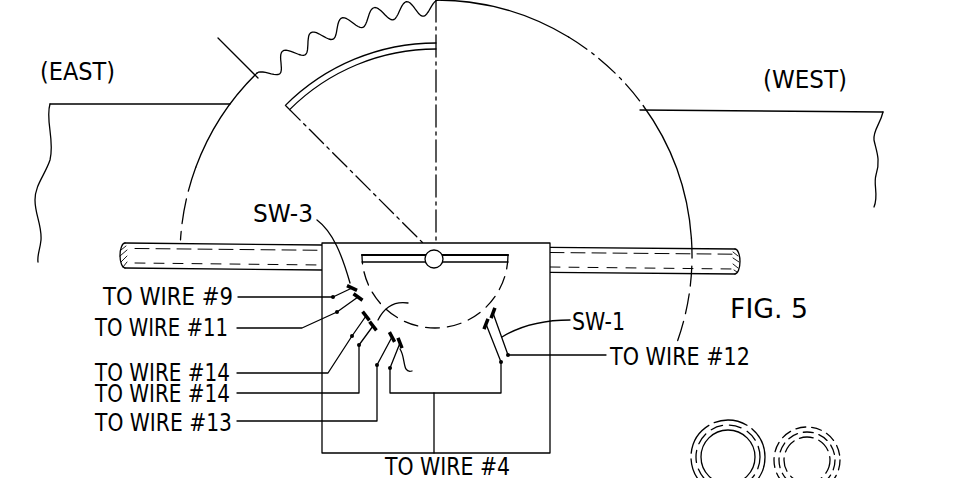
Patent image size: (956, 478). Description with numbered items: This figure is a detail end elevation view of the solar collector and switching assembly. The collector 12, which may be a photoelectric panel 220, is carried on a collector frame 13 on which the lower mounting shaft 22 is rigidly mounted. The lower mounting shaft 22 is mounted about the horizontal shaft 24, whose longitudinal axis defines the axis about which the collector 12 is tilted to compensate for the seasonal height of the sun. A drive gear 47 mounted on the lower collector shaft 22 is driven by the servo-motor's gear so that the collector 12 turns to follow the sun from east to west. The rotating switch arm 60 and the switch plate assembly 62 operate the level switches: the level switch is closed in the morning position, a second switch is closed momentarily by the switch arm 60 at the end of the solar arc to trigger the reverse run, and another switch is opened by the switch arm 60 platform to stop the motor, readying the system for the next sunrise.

The collector 12 is at (459, 133).
The photoelectric panel 220 is at (697, 67).
The collector frame 13 is at (663, 110).
The drive gear 47 is at (341, 33).
The lower mounting shaft 22 is at (437, 250).
The rotating switch arm 60 is at (477, 243).
The horizontal shaft 24 is at (699, 250).
The switch plate assembly 62 is at (551, 398).